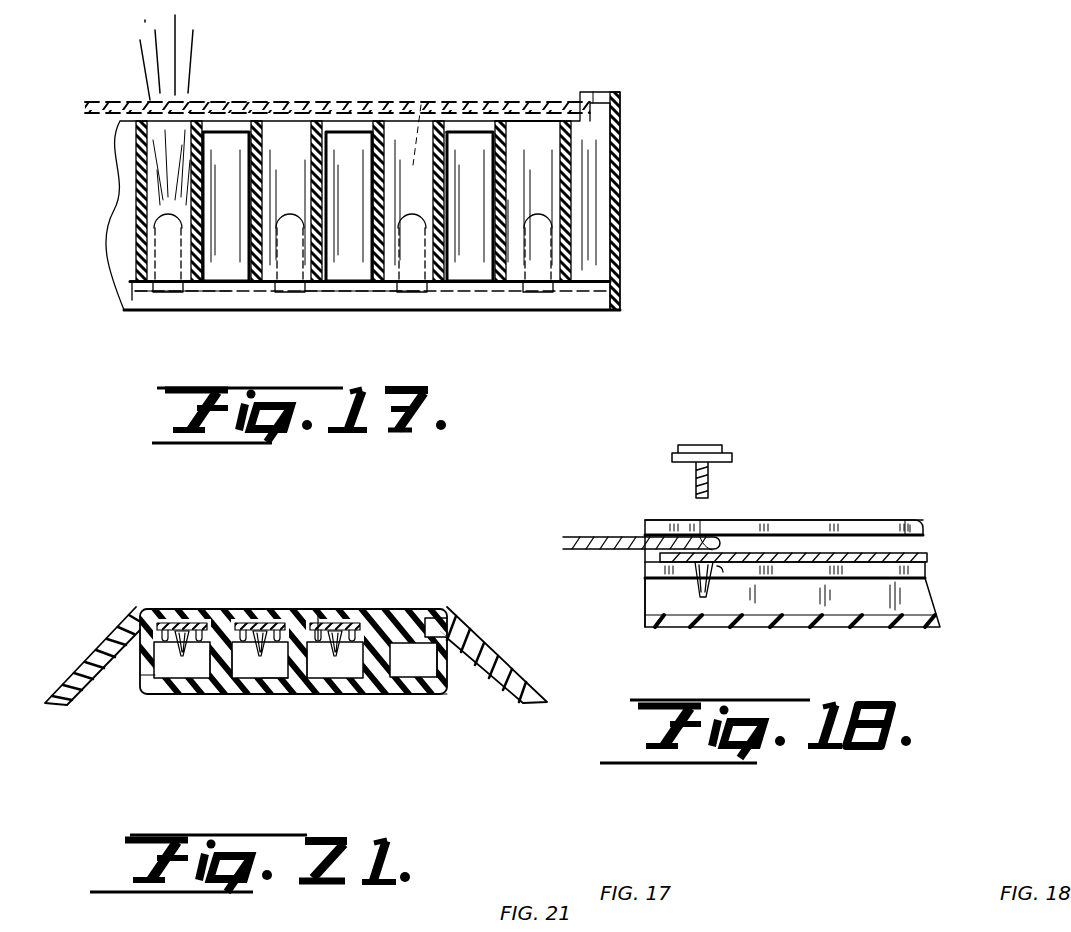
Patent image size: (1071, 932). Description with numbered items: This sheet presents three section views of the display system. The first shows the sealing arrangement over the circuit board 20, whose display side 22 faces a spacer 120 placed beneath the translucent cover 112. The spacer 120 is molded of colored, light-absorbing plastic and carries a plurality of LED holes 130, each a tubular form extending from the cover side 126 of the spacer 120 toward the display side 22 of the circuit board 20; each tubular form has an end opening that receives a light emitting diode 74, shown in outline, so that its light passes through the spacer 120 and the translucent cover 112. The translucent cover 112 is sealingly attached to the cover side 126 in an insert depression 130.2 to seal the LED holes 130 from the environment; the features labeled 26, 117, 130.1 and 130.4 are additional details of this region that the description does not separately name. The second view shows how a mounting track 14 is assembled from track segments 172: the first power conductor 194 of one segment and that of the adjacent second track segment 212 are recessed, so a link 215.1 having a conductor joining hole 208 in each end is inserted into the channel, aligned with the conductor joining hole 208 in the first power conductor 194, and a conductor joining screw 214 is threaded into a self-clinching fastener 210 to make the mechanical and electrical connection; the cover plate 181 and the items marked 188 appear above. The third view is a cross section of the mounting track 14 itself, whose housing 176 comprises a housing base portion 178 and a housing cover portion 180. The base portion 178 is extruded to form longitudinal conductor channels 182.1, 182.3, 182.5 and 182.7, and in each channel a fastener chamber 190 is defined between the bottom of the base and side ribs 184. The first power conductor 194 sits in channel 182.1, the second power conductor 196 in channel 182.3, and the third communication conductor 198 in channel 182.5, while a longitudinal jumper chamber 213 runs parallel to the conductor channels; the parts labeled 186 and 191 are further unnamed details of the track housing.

In FIG. 18, the mounting track 14 is at (790, 462).
In FIG. 21, the mounting track 14 is at (118, 640).
In FIG. 17, the circuit board 20 is at (355, 303).
In FIG. 17, the display side 22 is at (585, 206).
In FIG. 17, the base member 26 is at (226, 278).
In FIG. 17, the light emitting diode 74 is at (130, 211).
In FIG. 17, the translucent cover 112 is at (233, 108).
In FIG. 17, the light ray 117 is at (421, 100).
In FIG. 17, the spacer 120 is at (327, 120).
In FIG. 17, the cover side 126 is at (540, 118).
In FIG. 17, the LED hole 130 is at (423, 163).
In FIG. 17, the reflector lower portion 130.1 is at (447, 232).
In FIG. 17, the insert depression 130.2 is at (578, 95).
In FIG. 17, the reflector inner wall 130.4 is at (507, 223).
In FIG. 18, the track segment 172 is at (658, 520).
In FIG. 21, the housing 176 is at (138, 618).
In FIG. 21, the housing base portion 178 is at (458, 620).
In FIG. 21, the housing cover portion 180 is at (340, 609).
In FIG. 18, the cover plate 181 is at (858, 523).
In FIG. 18, the first longitudinal conductor channel 182.1 is at (668, 600).
In FIG. 21, the first longitudinal conductor channel 182.1 is at (142, 675).
In FIG. 21, the second longitudinal conductor channel 182.3 is at (274, 662).
In FIG. 21, the third longitudinal conductor channel 182.5 is at (370, 697).
In FIG. 21, the longitudinal conductor channel 182.7 is at (405, 657).
In FIG. 21, the side rib 184 is at (141, 610).
In FIG. 21, the cavity wall 186 is at (348, 697).
In FIG. 18, the plate 188 is at (645, 568).
In FIG. 21, the plate 188 is at (350, 612).
In FIG. 21, the fastener chamber 190 is at (342, 660).
In FIG. 21, the clip 191 is at (318, 607).
In FIG. 18, the first power conductor 194 is at (878, 553).
In FIG. 21, the first power conductor 194 is at (212, 660).
In FIG. 21, the second power conductor 196 is at (240, 662).
In FIG. 21, the third communication conductor 198 is at (320, 662).
In FIG. 18, the conductor joining hole 208 is at (705, 537).
In FIG. 18, the self-clinching fastener 210 is at (695, 592).
In FIG. 18, the second track segment 212 is at (820, 520).
In FIG. 21, the longitudinal jumper chamber 213 is at (447, 698).
In FIG. 18, the conductor joining screw 214 is at (708, 445).
In FIG. 18, the link 215.1 is at (600, 537).